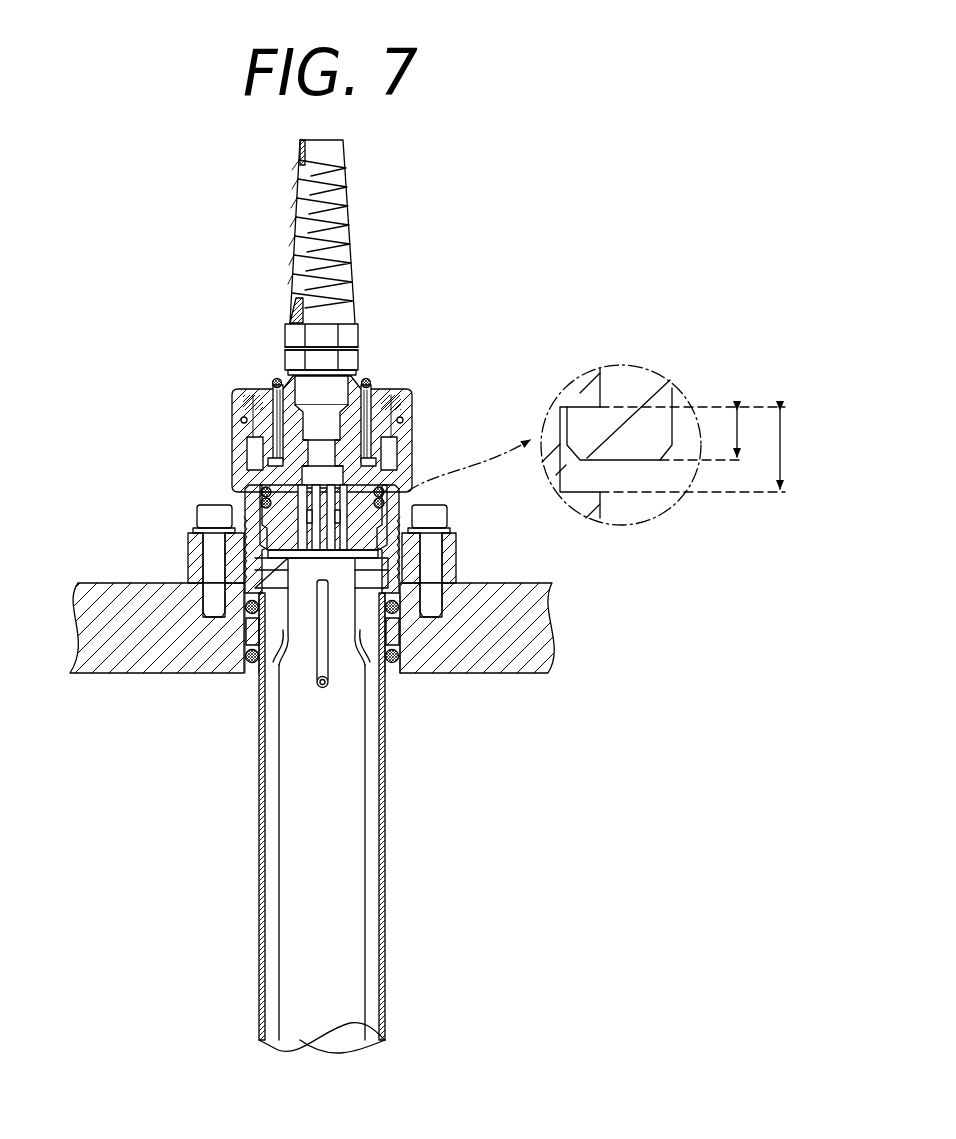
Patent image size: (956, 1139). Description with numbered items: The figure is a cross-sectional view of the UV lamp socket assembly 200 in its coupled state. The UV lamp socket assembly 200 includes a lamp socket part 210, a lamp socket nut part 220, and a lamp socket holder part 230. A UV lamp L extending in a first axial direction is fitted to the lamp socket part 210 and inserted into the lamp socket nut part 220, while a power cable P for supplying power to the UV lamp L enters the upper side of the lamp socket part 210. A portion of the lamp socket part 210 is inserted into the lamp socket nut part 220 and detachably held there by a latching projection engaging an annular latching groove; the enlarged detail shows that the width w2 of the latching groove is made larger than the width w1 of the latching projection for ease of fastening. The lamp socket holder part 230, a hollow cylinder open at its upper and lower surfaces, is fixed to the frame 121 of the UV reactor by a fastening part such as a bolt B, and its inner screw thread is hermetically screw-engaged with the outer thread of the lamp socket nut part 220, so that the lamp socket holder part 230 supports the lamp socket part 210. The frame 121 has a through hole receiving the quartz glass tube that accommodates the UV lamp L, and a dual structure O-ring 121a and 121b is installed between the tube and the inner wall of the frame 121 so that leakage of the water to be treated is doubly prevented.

The UV lamp socket assembly 200 is at (231, 157).
The power cable P is at (300, 266).
The lamp socket part 210 is at (418, 398).
The lamp socket nut part 220 is at (240, 499).
The lamp socket holder part 230 is at (182, 543).
The bolt B is at (432, 520).
The frame 121 is at (535, 625).
The O-ring 121b is at (398, 608).
The O-ring 121a is at (395, 664).
The UV lamp L is at (302, 779).
The width of the latching projection w1 is at (752, 433).
The width of the latching groove w2 is at (611, 445).